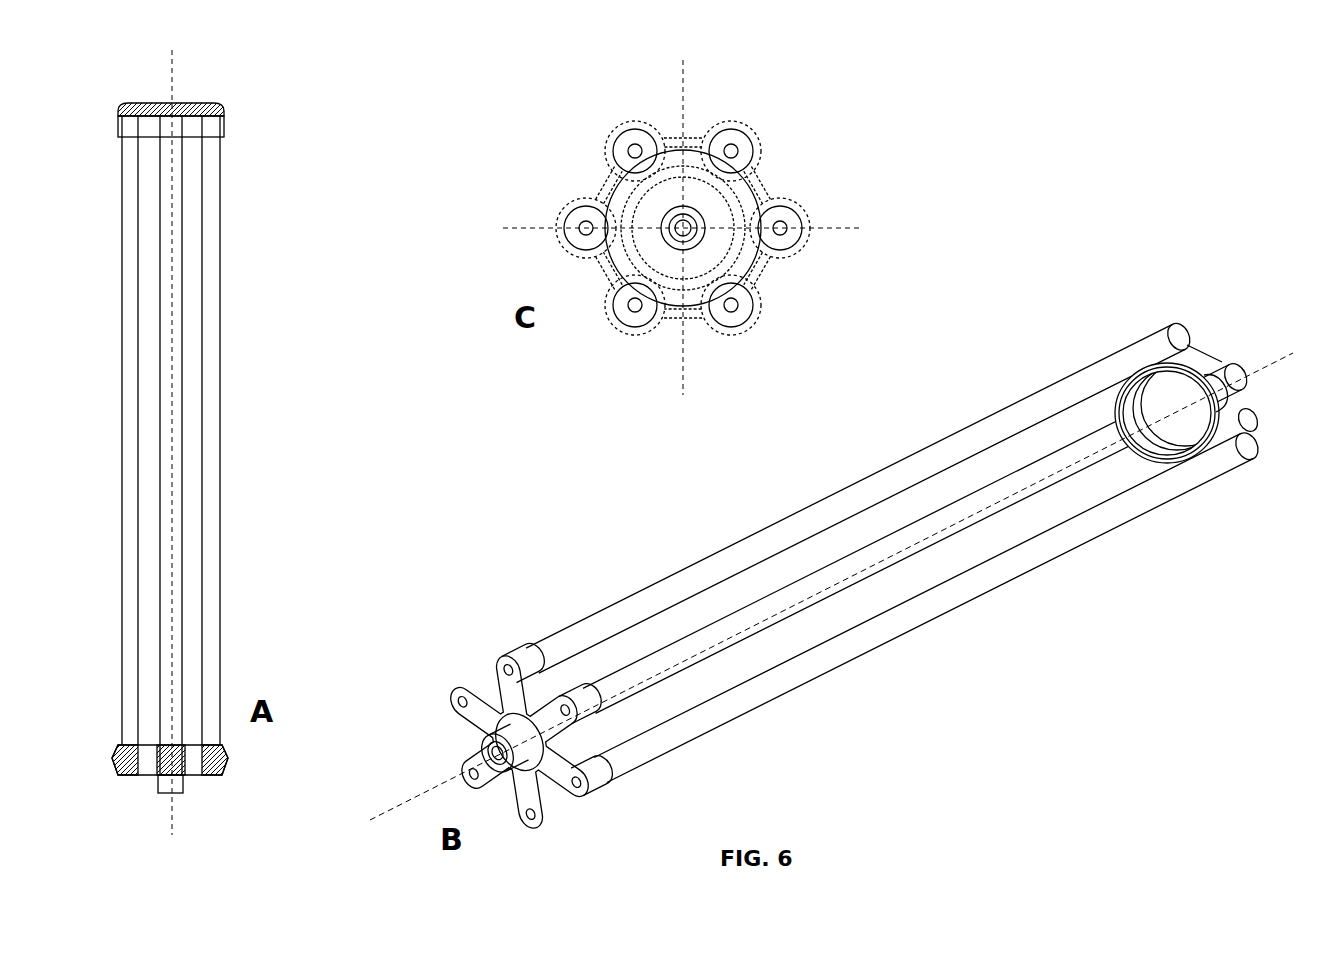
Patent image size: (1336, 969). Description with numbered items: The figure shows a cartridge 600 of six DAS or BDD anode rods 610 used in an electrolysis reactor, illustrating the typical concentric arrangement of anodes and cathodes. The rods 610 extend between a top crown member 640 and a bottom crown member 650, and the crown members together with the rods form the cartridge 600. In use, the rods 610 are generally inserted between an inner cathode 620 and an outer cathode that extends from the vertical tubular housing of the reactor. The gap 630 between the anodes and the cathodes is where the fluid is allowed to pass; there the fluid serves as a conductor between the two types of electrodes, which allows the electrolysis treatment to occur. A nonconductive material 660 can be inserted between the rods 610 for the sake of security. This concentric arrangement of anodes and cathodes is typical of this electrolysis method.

The cartridge 600 is at (245, 181).
The anode rods 610 is at (223, 311).
The inner cathode 620 is at (631, 205).
The gap 630 is at (737, 195).
The top crown member 640 is at (202, 103).
The bottom crown member 650 is at (223, 748).
The nonconductive material 660 is at (602, 267).